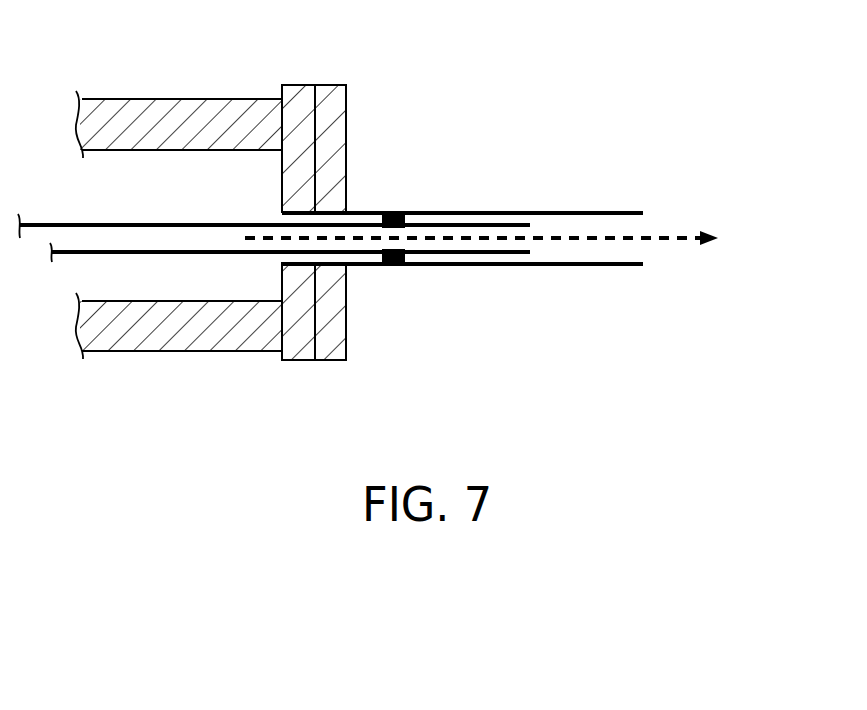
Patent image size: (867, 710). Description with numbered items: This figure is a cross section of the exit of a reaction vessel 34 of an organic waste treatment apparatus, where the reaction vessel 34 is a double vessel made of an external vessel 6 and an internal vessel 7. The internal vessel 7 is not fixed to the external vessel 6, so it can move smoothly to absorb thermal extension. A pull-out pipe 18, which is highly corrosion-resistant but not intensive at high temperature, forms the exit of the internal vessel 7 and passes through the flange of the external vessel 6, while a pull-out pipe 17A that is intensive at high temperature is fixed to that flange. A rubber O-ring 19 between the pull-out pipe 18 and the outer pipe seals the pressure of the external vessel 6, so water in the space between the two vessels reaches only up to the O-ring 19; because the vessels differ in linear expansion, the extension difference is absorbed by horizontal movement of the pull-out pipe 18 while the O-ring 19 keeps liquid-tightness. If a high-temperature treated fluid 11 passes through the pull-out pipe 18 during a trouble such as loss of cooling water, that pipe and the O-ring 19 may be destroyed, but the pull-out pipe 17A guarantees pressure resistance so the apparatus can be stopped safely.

The external vessel 6 is at (157, 98).
The internal vessel 7 is at (147, 243).
The reaction vessel 34 is at (423, 55).
The pull-out pipe intensive at high temperature 17A is at (580, 211).
The pull-out pipe not intensive at high temperature 18 is at (462, 254).
The O-ring 19 is at (401, 210).
The treated fluid 11 is at (500, 238).